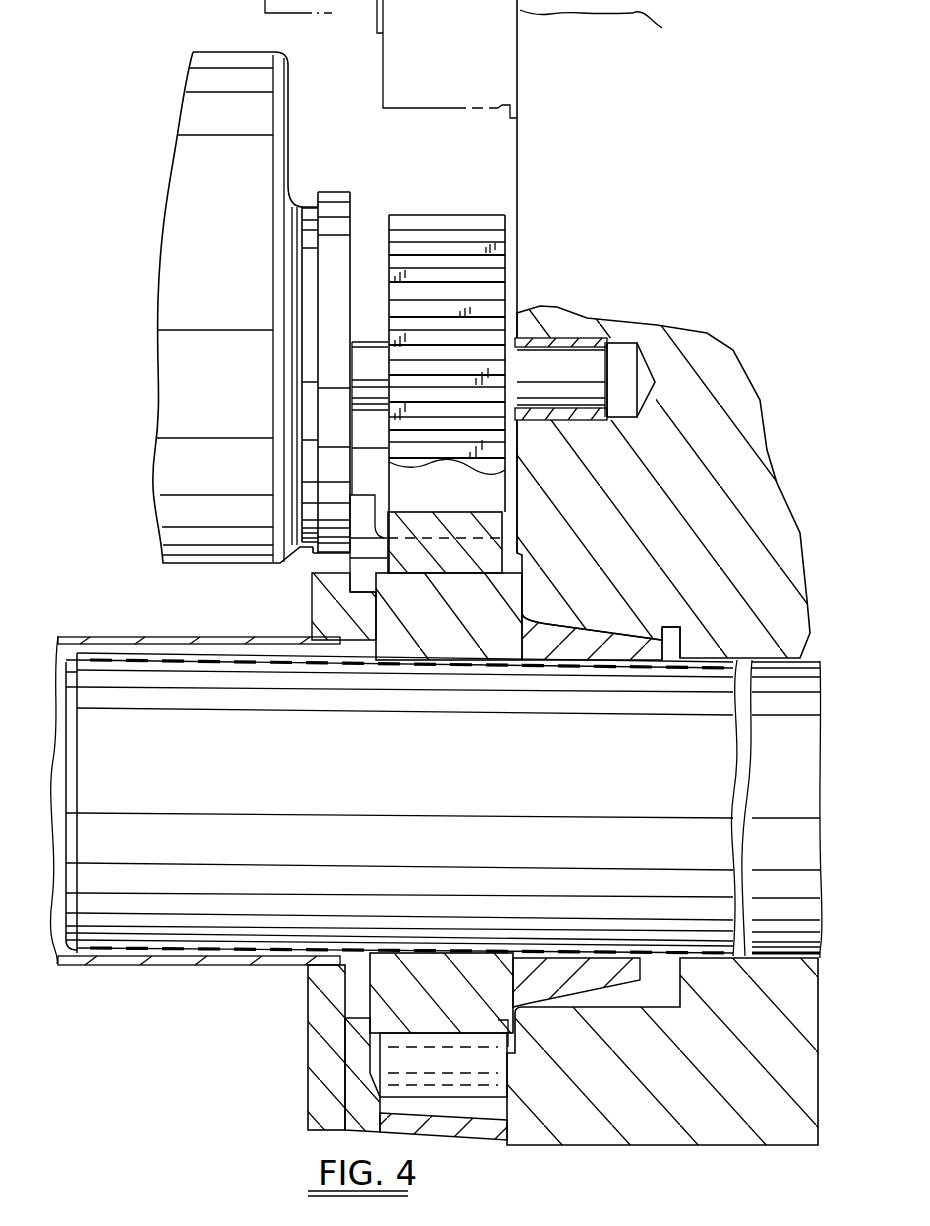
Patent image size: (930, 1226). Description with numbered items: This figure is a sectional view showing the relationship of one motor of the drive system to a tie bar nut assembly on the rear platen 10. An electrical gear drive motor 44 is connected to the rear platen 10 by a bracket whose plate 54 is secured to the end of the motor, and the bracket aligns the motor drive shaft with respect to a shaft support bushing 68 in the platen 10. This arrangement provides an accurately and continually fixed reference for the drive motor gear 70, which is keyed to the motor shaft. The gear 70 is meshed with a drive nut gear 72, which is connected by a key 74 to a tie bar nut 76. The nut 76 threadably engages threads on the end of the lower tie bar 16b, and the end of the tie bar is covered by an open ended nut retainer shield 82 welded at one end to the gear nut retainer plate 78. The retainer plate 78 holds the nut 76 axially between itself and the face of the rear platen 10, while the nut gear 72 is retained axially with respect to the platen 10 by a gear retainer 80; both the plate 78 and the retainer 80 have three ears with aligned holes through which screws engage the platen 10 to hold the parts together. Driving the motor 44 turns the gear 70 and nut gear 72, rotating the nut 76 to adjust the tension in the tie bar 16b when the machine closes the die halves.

The rear platen 10 is at (650, 32).
The electrical gear drive motor 44 is at (274, 88).
The plate 54 is at (328, 198).
The drive motor gear 70 is at (490, 248).
The shaft support bushing 68 is at (547, 338).
The drive nut gear 72 is at (490, 548).
The tie bar nut 76 is at (503, 607).
The nut retainer shield 82 is at (122, 636).
The lower tie bar 16b is at (228, 935).
The key 74 is at (447, 1020).
The gear nut retainer plate 78 is at (309, 1026).
The gear retainer 80 is at (318, 1108).